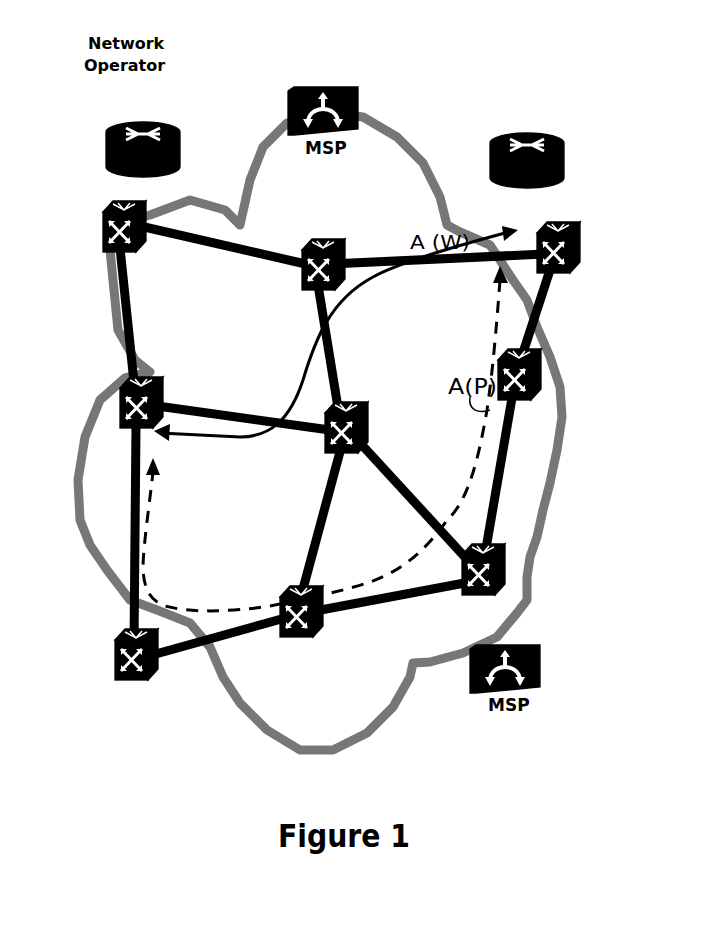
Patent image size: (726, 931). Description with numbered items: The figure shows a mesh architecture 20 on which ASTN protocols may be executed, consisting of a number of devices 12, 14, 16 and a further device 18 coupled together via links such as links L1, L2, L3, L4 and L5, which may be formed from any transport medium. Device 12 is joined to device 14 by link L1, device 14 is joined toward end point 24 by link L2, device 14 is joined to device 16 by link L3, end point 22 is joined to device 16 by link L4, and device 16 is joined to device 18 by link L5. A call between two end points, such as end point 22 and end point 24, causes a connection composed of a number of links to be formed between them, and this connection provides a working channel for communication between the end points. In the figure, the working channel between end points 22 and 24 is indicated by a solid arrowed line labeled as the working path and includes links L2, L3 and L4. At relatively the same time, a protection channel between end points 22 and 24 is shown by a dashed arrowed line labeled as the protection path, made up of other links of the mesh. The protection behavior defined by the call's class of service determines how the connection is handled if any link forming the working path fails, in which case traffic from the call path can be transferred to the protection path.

The device 12 is at (104, 226).
The device 14 is at (320, 238).
The device 16 is at (368, 420).
The router node 18 is at (505, 573).
The mesh architecture 20 is at (616, 101).
The end point 22 is at (120, 415).
The end point 24 is at (583, 248).
The link L1 is at (242, 258).
The link L2 is at (467, 270).
The link L3 is at (345, 370).
The link L4 is at (253, 418).
The link L5 is at (445, 482).